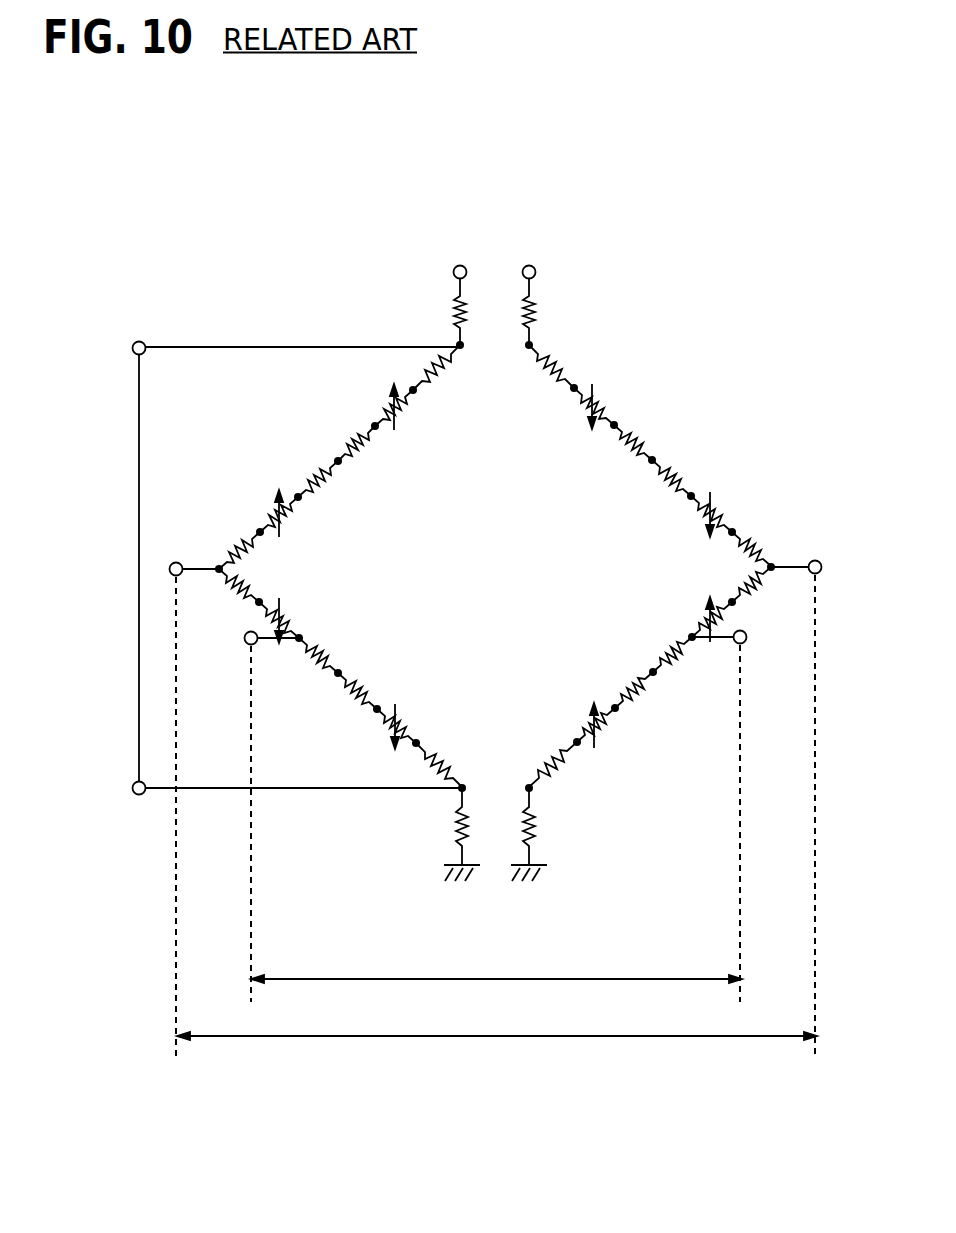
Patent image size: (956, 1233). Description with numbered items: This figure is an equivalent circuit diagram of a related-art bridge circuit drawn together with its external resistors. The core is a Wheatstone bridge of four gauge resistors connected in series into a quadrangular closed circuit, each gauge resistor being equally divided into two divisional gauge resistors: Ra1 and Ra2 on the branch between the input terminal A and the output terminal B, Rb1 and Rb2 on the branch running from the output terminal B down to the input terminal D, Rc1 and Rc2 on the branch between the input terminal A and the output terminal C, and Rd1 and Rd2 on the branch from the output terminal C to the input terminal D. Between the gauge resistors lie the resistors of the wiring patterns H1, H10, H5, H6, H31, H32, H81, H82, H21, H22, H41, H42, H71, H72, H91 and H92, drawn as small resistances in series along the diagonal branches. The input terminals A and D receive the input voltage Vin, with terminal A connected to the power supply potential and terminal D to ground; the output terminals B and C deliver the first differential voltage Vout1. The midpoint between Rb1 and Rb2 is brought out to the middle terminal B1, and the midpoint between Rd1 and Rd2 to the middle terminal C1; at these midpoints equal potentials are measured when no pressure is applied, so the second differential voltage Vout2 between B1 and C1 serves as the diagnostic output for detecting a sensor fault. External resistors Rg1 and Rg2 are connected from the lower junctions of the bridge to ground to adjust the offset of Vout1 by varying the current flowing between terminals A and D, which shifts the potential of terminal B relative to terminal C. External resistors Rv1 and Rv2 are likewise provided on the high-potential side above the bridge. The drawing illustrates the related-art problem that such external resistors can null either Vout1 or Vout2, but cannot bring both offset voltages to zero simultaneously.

The external resistor Rv1 is at (455, 309).
The external resistor Rv2 is at (535, 309).
The external resistor Rg1 is at (456, 829).
The external resistor Rg2 is at (535, 829).
The wiring pattern H5 is at (447, 373).
The wiring pattern H6 is at (549, 378).
The wiring pattern H41 is at (366, 449).
The wiring pattern H42 is at (330, 482).
The wiring pattern H31 is at (252, 553).
The wiring pattern H32 is at (254, 583).
The wiring pattern H21 is at (332, 650).
The wiring pattern H22 is at (368, 687).
The wiring pattern H1 is at (447, 762).
The wiring pattern H10 is at (566, 758).
The wiring pattern H71 is at (622, 449).
The wiring pattern H72 is at (660, 484).
The wiring pattern H81 is at (743, 553).
The wiring pattern H82 is at (742, 585).
The wiring pattern H91 is at (664, 649).
The wiring pattern H92 is at (626, 687).
The divisional gauge resistor Ra1 is at (386, 404).
The divisional gauge resistor Ra2 is at (270, 511).
The divisional gauge resistor Rb1 is at (290, 618).
The divisional gauge resistor Rb2 is at (386, 738).
The divisional gauge resistor Rc1 is at (604, 406).
The divisional gauge resistor Rc2 is at (722, 512).
The divisional gauge resistor Rd1 is at (700, 614).
The divisional gauge resistor Rd2 is at (600, 733).
The input terminal A is at (295, 335).
The output terminal B is at (183, 570).
The output terminal C is at (806, 567).
The input terminal D is at (296, 805).
The middle terminal B1 is at (253, 650).
The middle terminal C1 is at (736, 649).
The input voltage Vin is at (111, 568).
The first differential voltage Vout1 is at (497, 1050).
The second differential voltage Vout2 is at (496, 968).